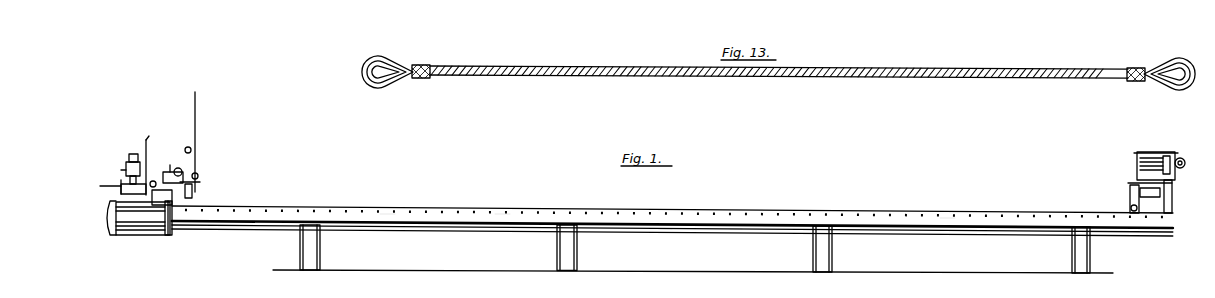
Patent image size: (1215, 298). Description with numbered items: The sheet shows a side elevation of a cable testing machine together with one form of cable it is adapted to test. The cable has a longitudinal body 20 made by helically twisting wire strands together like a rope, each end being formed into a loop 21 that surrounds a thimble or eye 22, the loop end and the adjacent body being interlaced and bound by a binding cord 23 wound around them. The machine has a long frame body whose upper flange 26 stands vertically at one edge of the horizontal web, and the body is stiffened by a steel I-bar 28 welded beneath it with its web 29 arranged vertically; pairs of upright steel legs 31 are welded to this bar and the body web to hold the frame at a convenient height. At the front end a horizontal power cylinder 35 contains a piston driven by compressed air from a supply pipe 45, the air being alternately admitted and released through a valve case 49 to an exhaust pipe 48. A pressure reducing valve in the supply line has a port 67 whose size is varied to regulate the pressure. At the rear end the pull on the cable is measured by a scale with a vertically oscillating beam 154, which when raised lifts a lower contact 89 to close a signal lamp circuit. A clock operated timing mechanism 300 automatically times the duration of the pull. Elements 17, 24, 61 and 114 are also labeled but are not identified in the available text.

In FIG. 1, the rail 17 is at (383, 213).
In FIG. 13, the longitudinal body of utility cable 20 is at (896, 67).
In FIG. 13, the loop 21 is at (378, 59).
In FIG. 13, the thimble or eye 22 is at (385, 86).
In FIG. 13, the binding cord 23 is at (422, 66).
In FIG. 1, the track 24 is at (796, 213).
In FIG. 1, the upper flange 26 is at (502, 213).
In FIG. 1, the steel I-bar 28 is at (736, 229).
In FIG. 1, the web of I-bar 29 is at (666, 229).
In FIG. 1, the upright steel legs 31 is at (311, 249).
In FIG. 1, the power cylinder 35 is at (125, 222).
In FIG. 1, the supply pipe 45 is at (200, 107).
In FIG. 1, the exhaust pipe 48 is at (146, 158).
In FIG. 1, the valve case 49 is at (102, 186).
In FIG. 1, the ring 61 is at (153, 181).
In FIG. 1, the port 67 is at (200, 182).
In FIG. 1, the lower contact 89 is at (1150, 149).
In FIG. 1, the valve 114 is at (129, 160).
In FIG. 1, the scale beam 154 is at (1140, 159).
In FIG. 1, the timing mechanism 300 is at (165, 170).